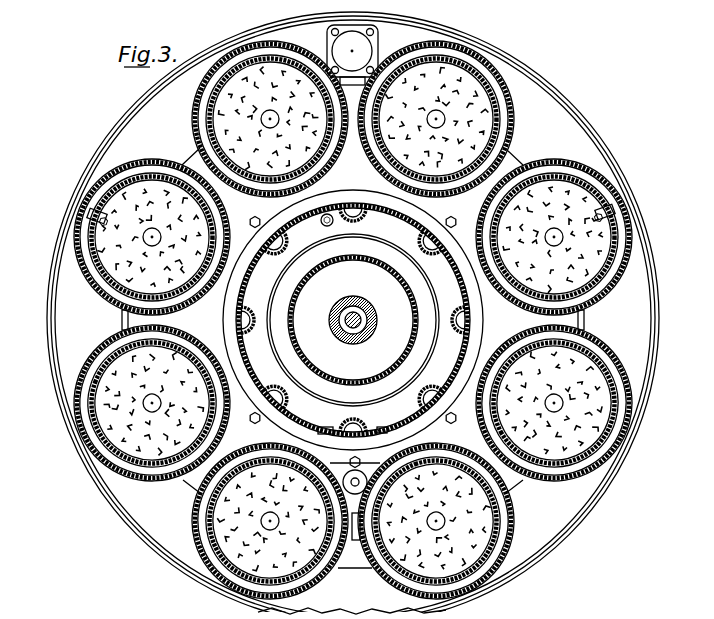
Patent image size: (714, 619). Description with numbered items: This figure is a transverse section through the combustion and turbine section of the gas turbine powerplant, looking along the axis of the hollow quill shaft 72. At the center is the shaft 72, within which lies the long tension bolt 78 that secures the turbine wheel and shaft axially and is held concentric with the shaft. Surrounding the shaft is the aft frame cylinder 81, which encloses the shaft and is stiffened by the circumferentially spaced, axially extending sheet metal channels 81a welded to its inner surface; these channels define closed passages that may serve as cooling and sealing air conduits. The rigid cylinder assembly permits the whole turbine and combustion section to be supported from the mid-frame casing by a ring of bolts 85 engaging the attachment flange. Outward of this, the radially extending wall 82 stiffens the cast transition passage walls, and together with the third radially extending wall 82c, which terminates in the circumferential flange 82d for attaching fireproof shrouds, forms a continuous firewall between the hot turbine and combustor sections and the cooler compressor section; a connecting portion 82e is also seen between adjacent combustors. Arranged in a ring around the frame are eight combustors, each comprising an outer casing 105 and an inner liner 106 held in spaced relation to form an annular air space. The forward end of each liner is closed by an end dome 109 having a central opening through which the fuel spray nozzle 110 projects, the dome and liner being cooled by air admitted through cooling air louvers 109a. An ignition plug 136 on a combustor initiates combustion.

The quill shaft 72 is at (358, 343).
The bolt 78 is at (360, 326).
The aft frame cylinder 81 is at (400, 218).
The sheet metal channels 81a is at (252, 329).
The wall 82 is at (253, 218).
The third radially extending wall 82c is at (73, 290).
The circumferential flange 82d is at (60, 252).
The connecting bar 82e is at (122, 322).
The bolts 85 is at (451, 218).
The outer casing 105 is at (152, 160).
The inner liner 106 is at (303, 78).
The end dome 109 is at (123, 182).
The cooling air louvers 109a is at (229, 106).
The fuel spray nozzle 110 is at (268, 111).
The ignition plug 136 is at (85, 210).